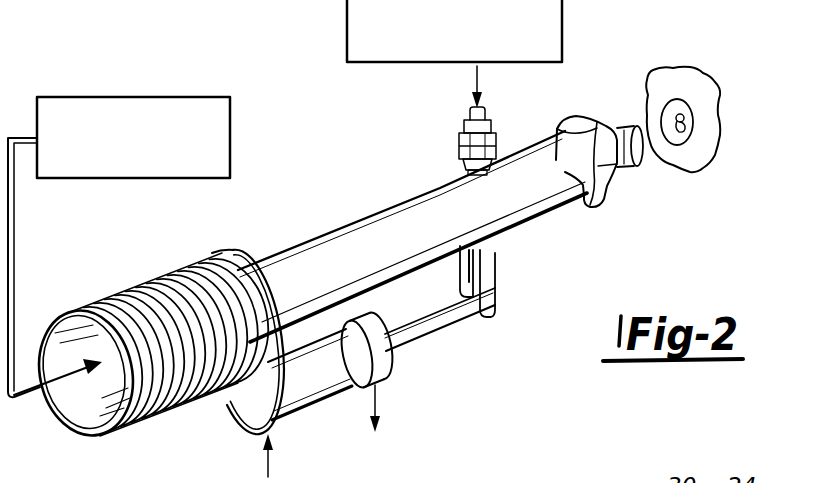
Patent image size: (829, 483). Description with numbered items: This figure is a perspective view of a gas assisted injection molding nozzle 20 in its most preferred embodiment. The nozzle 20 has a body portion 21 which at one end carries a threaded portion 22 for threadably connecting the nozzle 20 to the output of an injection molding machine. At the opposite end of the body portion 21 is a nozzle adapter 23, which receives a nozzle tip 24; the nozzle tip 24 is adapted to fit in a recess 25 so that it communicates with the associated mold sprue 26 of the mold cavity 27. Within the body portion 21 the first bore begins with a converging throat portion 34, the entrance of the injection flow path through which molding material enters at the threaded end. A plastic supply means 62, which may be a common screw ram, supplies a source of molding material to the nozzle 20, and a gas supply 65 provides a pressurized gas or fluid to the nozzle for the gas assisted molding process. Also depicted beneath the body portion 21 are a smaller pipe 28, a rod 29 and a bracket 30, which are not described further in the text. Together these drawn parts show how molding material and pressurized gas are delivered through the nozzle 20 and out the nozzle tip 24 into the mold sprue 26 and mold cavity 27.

The injection molding nozzle 20 is at (378, 233).
The body portion 21 is at (300, 262).
The threaded portion 22 is at (147, 290).
The nozzle adapter 23 is at (583, 123).
The nozzle tip 24 is at (632, 165).
The recess 25 is at (667, 104).
The mold sprue 26 is at (645, 134).
The mold cavity 27 is at (697, 96).
The coolant pipe 28 is at (308, 390).
The rod 29 is at (440, 320).
The bracket 30 is at (495, 295).
The converging throat portion 34 is at (95, 405).
The plastic supply means 62 is at (163, 97).
The gas supply 65 is at (372, 62).